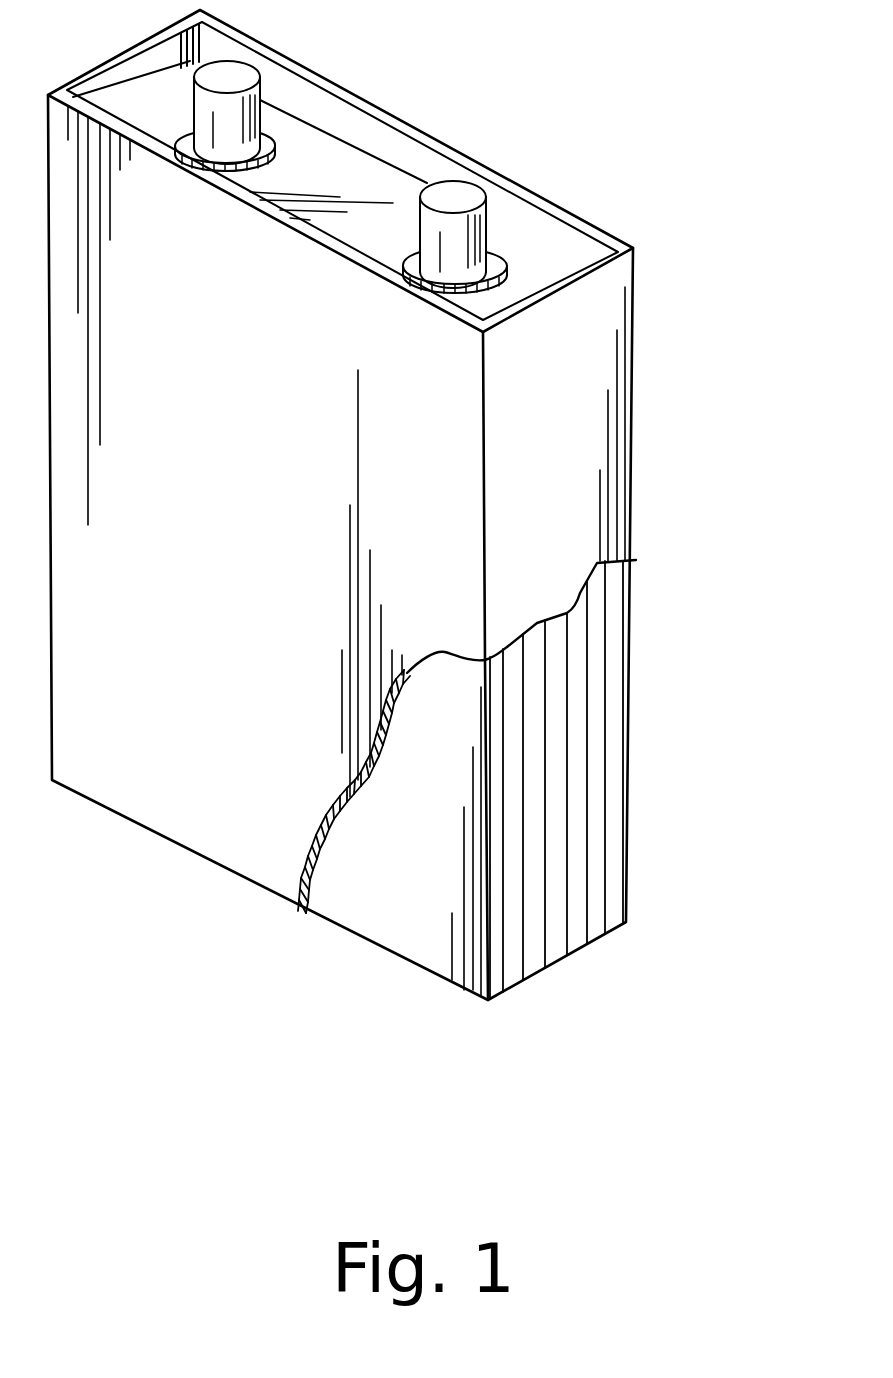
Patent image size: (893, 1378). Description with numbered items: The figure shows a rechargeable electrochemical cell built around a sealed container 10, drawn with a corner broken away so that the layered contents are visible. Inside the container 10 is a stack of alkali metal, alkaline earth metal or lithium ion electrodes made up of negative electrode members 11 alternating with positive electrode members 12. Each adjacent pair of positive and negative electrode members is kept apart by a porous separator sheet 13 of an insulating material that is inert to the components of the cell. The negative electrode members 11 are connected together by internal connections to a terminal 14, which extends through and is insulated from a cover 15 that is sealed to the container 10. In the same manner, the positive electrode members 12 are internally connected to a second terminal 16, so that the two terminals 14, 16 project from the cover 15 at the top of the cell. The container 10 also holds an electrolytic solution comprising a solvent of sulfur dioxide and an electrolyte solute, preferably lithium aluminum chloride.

The sealed container 10 is at (583, 442).
The negative electrode members 11 is at (512, 977).
The positive electrode members 12 is at (555, 932).
The porous separator sheets 13 is at (535, 950).
The terminal 14 is at (457, 197).
The cover 15 is at (333, 177).
The terminal 16 is at (227, 78).